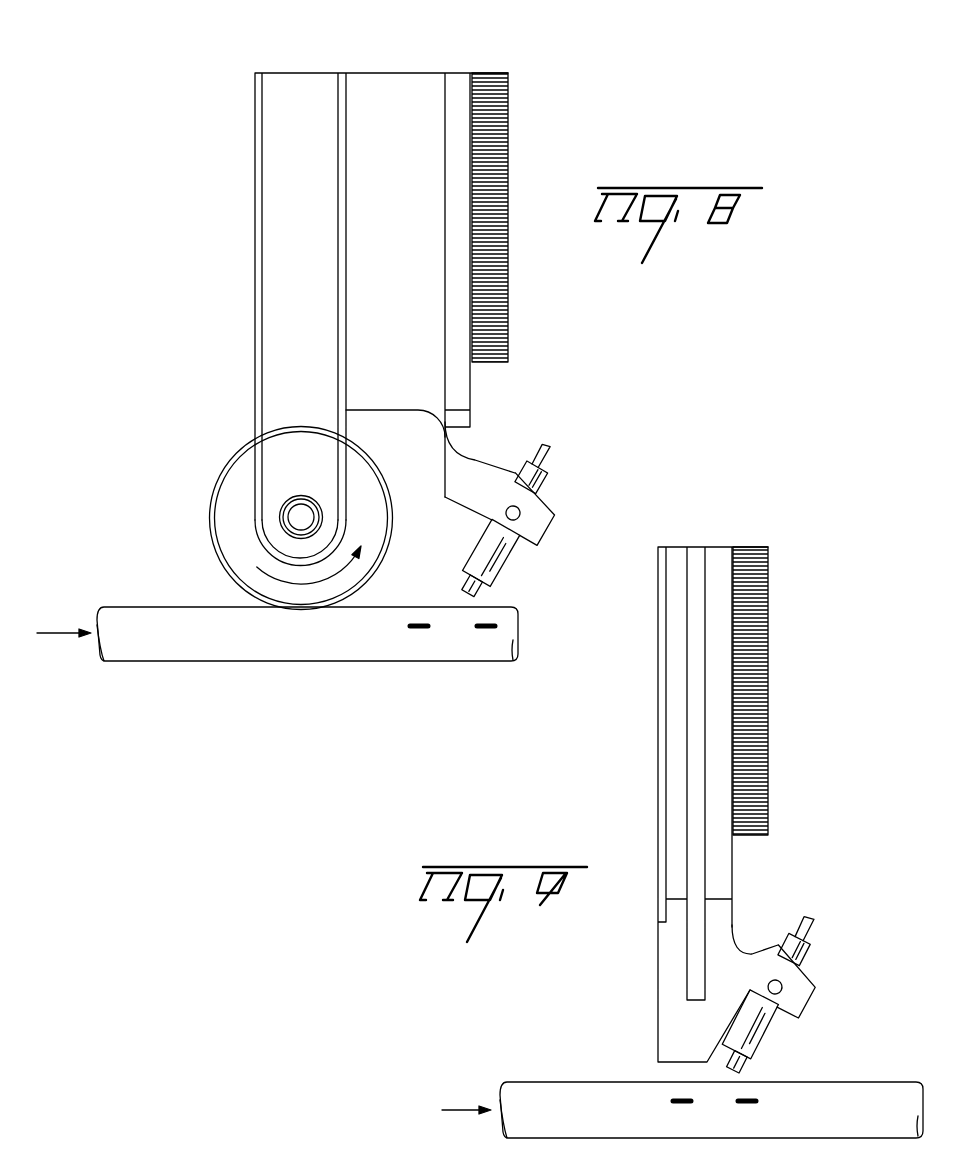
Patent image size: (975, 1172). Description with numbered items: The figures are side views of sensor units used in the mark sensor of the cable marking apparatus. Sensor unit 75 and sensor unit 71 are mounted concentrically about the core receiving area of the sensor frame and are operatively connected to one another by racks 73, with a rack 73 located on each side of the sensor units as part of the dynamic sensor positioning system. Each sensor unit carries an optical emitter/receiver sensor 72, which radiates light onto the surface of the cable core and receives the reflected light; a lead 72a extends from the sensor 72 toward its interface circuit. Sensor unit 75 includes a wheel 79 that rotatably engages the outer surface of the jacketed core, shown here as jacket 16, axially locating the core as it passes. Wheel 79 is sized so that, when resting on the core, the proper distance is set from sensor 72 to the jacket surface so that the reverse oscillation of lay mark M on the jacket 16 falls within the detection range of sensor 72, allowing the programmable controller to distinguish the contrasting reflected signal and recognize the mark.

In FIG. 8, the sensor unit 75 is at (300, 78).
In FIG. 9, the sensor unit 71 is at (700, 540).
In FIG. 8, the rack 73 is at (508, 140).
In FIG. 9, the rack 73 is at (760, 645).
In FIG. 8, the wheel 79 is at (365, 515).
In FIG. 8, the optical emitter/receiver sensor 72 is at (507, 560).
In FIG. 9, the optical emitter/receiver sensor 72 is at (750, 1035).
In FIG. 9, the marker cable 72a is at (803, 930).
In FIG. 8, the jacket 16 is at (233, 662).
In FIG. 9, the jacket 16 is at (600, 1082).
In FIG. 8, the lay mark M is at (446, 645).
In FIG. 9, the lay mark M is at (752, 1082).